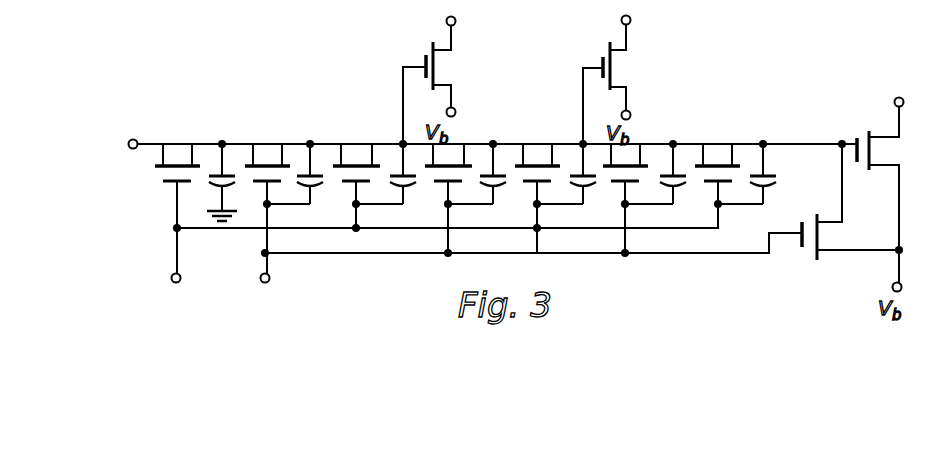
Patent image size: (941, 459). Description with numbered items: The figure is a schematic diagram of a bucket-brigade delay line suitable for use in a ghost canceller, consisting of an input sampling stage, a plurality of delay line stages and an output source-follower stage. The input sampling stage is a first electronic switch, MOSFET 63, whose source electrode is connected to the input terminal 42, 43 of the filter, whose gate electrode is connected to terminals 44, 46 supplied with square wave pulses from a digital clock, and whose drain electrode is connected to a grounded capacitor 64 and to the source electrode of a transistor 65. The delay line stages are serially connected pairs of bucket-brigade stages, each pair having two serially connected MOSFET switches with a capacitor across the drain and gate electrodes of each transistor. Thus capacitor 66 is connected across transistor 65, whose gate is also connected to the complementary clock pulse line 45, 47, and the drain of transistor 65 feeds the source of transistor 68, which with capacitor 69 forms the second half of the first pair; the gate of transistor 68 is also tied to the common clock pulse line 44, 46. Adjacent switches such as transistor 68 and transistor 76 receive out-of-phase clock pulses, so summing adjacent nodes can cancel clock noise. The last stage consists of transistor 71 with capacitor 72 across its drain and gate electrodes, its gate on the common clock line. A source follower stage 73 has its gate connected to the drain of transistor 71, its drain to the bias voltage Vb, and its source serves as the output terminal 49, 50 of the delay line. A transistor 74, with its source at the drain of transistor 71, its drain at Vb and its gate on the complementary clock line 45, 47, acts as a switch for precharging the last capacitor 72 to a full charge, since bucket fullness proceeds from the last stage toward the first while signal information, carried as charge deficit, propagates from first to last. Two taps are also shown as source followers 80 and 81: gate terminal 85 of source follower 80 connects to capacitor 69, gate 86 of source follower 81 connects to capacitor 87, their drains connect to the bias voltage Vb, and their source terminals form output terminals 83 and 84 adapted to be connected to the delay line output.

The input terminal 42 is at (137, 123).
The input terminal 43 is at (150, 118).
The clock pulse line terminal 44 is at (175, 296).
The clock pulse line terminal 46 is at (207, 290).
The complementary clock pulse line terminal 45 is at (278, 296).
The complementary clock pulse line terminal 47 is at (300, 290).
The output terminal 49 is at (899, 86).
The output terminal 50 is at (903, 102).
The MOSFET 63 is at (176, 164).
The grounded capacitor 64 is at (224, 184).
The transistor 65 is at (263, 164).
The capacitor 66 is at (312, 185).
The transistor 68 is at (352, 164).
The capacitor 69 is at (406, 186).
The transistor 71 is at (725, 164).
The capacitor 72 is at (766, 188).
The source follower stage 73 is at (855, 140).
The transistor 74 is at (814, 258).
The transistor switch 76 is at (458, 160).
The source follower 80 is at (437, 73).
The source follower 81 is at (615, 72).
The output terminal 83 is at (456, 21).
The output terminal 84 is at (631, 20).
The gate terminal 85 is at (401, 142).
The gate 86 is at (580, 142).
The capacitor 87 is at (585, 186).